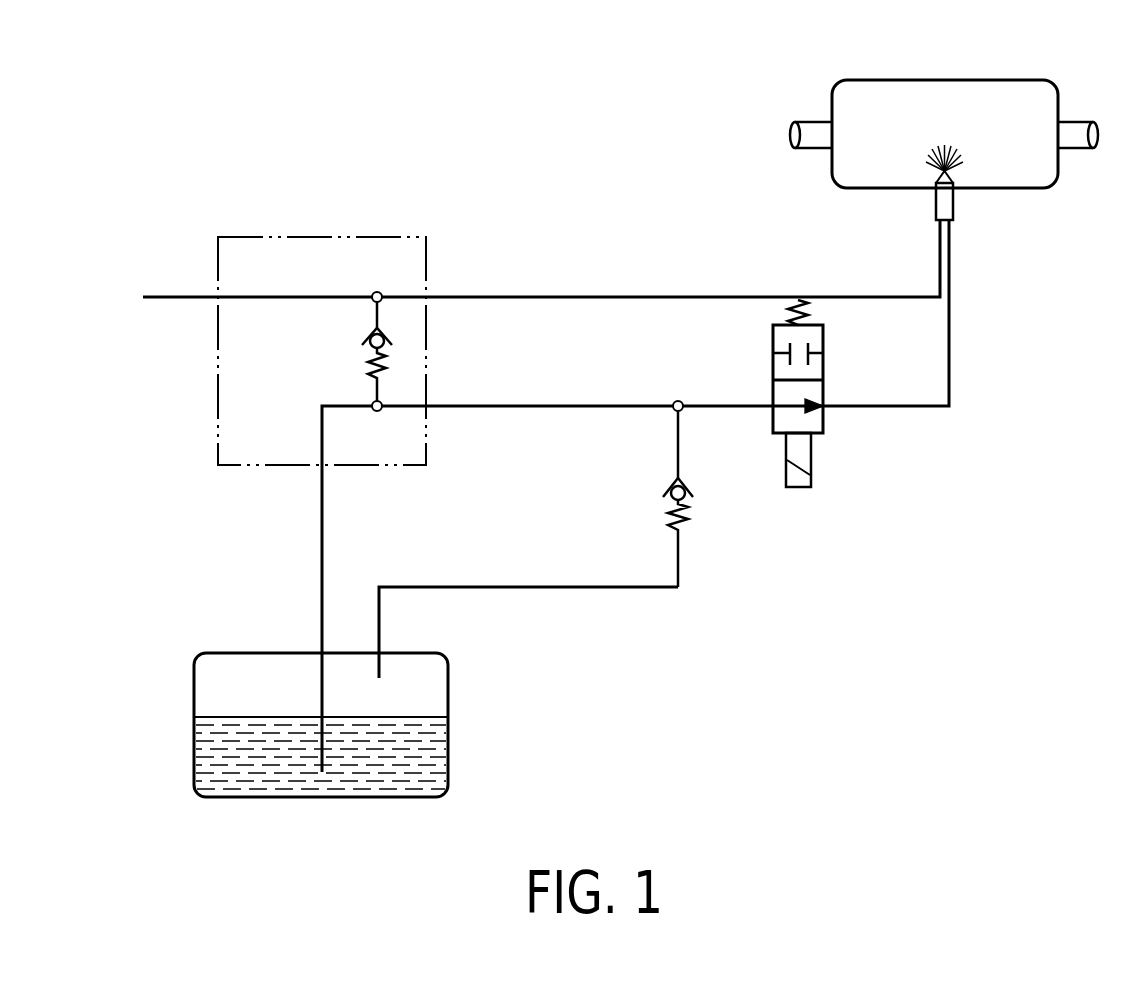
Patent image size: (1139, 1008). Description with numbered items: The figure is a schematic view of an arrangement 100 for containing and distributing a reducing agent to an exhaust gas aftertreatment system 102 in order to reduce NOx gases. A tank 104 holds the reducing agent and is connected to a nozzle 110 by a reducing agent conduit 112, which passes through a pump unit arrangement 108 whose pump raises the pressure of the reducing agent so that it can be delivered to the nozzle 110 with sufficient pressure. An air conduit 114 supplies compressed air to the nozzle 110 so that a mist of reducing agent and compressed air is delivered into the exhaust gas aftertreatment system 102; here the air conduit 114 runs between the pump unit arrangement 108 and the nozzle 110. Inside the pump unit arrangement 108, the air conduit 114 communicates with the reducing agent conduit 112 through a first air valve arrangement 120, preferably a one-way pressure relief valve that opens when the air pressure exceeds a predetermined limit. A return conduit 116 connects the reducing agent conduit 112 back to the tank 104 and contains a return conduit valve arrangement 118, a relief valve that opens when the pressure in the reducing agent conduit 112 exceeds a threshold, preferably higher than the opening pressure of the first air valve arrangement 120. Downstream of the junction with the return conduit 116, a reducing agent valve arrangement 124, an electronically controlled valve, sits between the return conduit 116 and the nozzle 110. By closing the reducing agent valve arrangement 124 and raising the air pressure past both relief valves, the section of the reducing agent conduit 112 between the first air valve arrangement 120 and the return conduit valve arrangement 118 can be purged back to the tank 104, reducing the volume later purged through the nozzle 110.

The arrangement 100 is at (383, 46).
The exhaust gas aftertreatment system 102 is at (943, 80).
The tank 104 is at (258, 652).
The pump unit arrangement 108 is at (238, 237).
The nozzle 110 is at (946, 202).
The reducing agent conduit 112 is at (893, 407).
The air conduit 114 is at (660, 297).
The return conduit 116 is at (563, 590).
The return conduit valve arrangement 118 is at (690, 510).
The first air valve arrangement 120 is at (368, 340).
The reducing agent valve arrangement 124 is at (823, 420).